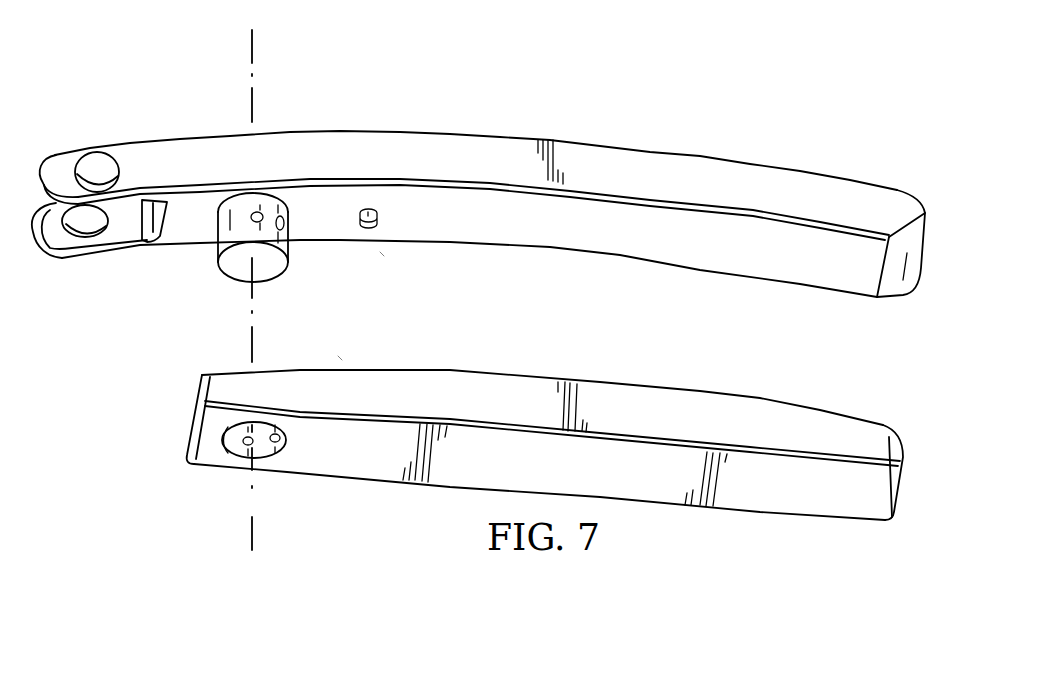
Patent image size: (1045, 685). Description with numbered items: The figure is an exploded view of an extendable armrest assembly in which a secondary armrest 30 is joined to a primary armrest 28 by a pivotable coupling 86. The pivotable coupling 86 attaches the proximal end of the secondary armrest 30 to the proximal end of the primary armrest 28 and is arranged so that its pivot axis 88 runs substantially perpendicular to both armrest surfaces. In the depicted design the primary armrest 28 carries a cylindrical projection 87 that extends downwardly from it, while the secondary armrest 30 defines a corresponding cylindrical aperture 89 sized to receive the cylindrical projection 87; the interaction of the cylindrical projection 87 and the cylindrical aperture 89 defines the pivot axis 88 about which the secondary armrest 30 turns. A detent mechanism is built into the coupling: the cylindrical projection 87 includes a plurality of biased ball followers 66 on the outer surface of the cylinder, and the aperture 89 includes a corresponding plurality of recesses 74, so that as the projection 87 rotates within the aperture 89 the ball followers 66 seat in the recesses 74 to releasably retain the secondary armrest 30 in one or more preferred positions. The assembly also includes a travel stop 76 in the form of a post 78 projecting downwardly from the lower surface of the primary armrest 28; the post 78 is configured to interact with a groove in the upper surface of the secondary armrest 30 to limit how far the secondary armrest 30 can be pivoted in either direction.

The primary armrest 28 is at (636, 145).
The secondary armrest 30 is at (637, 382).
The biased ball follower 66 is at (252, 213).
The detent recess 74 is at (282, 442).
The travel stop 76 is at (389, 260).
The post 78 is at (378, 215).
The pivotable coupling 86 is at (146, 351).
The cylindrical projection 87 is at (223, 268).
The pivot axis 88 is at (255, 312).
The cylindrical aperture 89 is at (224, 457).